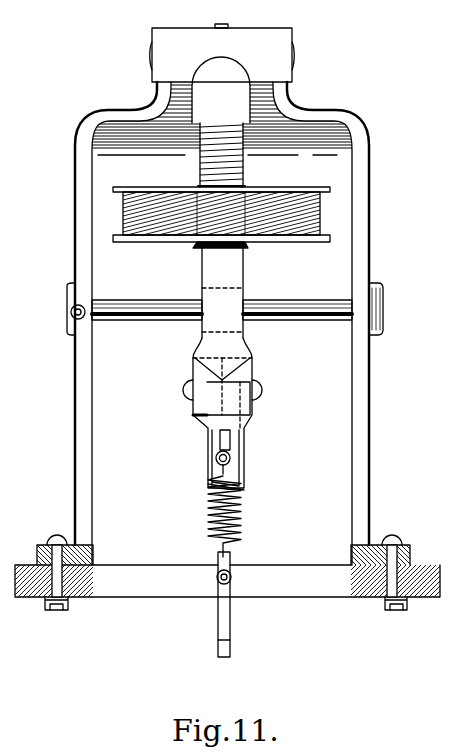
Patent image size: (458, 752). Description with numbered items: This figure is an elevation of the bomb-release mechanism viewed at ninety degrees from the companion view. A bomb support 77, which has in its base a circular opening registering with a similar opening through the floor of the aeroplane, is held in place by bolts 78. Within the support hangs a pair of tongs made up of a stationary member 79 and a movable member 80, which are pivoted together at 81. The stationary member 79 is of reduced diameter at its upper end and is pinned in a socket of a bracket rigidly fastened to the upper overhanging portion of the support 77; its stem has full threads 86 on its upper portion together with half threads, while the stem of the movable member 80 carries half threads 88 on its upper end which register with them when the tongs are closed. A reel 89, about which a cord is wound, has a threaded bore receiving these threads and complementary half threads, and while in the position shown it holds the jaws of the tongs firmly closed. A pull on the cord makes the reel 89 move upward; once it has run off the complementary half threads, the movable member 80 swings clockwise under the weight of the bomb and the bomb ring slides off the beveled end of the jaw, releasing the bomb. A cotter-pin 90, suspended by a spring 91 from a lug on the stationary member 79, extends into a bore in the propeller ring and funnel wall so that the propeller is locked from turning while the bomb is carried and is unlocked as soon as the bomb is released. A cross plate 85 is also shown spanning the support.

The bomb support 77 is at (362, 192).
The bolts 78 is at (53, 542).
The stationary member 79 is at (243, 170).
The movable member 80 is at (226, 275).
The pivot 81 is at (255, 386).
The plate 85 is at (322, 302).
The full threads 86 is at (200, 175).
The half threads 88 is at (126, 190).
The reel 89 is at (320, 234).
The cotter-pin 90 is at (231, 622).
The spring 91 is at (242, 508).